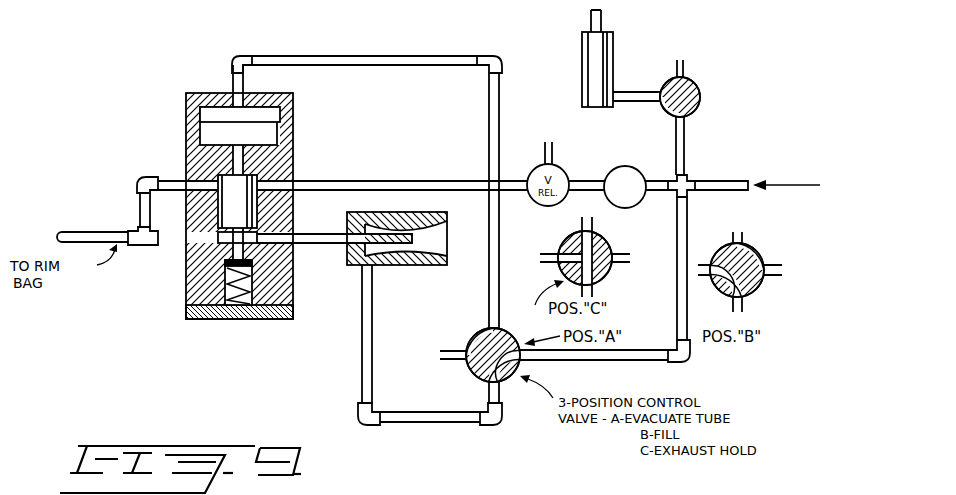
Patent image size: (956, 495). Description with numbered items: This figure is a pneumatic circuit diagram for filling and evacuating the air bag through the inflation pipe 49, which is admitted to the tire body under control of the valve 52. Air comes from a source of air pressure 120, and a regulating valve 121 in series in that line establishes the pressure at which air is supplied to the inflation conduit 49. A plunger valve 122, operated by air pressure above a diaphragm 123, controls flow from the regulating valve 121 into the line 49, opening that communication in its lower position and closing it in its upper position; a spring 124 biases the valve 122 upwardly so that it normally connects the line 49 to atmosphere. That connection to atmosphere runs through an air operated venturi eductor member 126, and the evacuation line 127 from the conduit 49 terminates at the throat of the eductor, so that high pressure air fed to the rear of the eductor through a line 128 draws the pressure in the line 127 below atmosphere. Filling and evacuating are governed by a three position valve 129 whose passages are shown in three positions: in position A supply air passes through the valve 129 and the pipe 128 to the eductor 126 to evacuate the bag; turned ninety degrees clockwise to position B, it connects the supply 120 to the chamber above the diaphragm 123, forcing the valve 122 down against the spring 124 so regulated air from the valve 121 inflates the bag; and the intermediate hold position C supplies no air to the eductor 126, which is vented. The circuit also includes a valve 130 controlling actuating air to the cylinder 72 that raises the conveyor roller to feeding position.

The pipe 49 is at (80, 231).
The valve 52 is at (183, 303).
The cylinder 72 is at (582, 58).
The source of air pressure 120 is at (720, 181).
The regulating valve 121 is at (628, 165).
The plunger valve 122 is at (258, 213).
The diaphragm 123 is at (270, 120).
The spring 124 is at (253, 293).
The venturi eductor member 126 is at (428, 266).
The evacuation line 127 is at (323, 246).
The line 128 is at (362, 355).
The three position valve 129 is at (468, 374).
The valve 130 is at (700, 86).